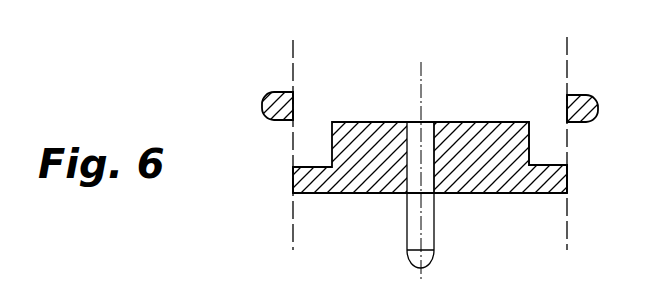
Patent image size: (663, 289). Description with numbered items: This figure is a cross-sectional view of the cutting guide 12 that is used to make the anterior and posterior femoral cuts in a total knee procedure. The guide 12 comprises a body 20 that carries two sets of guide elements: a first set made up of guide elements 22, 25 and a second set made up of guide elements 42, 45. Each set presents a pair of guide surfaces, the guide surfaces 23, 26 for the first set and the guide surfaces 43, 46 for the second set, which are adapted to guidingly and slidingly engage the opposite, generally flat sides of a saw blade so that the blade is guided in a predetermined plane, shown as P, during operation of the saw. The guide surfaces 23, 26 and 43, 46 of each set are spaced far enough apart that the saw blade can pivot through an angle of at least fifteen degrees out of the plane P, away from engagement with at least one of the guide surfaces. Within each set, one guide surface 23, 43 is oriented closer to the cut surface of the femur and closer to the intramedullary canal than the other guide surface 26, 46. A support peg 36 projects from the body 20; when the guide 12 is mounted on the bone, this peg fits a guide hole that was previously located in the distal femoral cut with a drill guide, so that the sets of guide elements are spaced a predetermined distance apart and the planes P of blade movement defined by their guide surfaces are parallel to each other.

The predetermined plane P is at (297, 47).
The cutting guide 12 is at (483, 112).
The body 20 is at (470, 195).
The guide element 22 is at (596, 116).
The guide surface 23 is at (569, 174).
The guide element 25 is at (522, 194).
The guide surface 26 is at (567, 104).
The support peg 36 is at (408, 240).
The guide element 42 is at (262, 96).
The guide surface 43 is at (293, 170).
The guide element 45 is at (308, 178).
The guide surface 46 is at (296, 100).